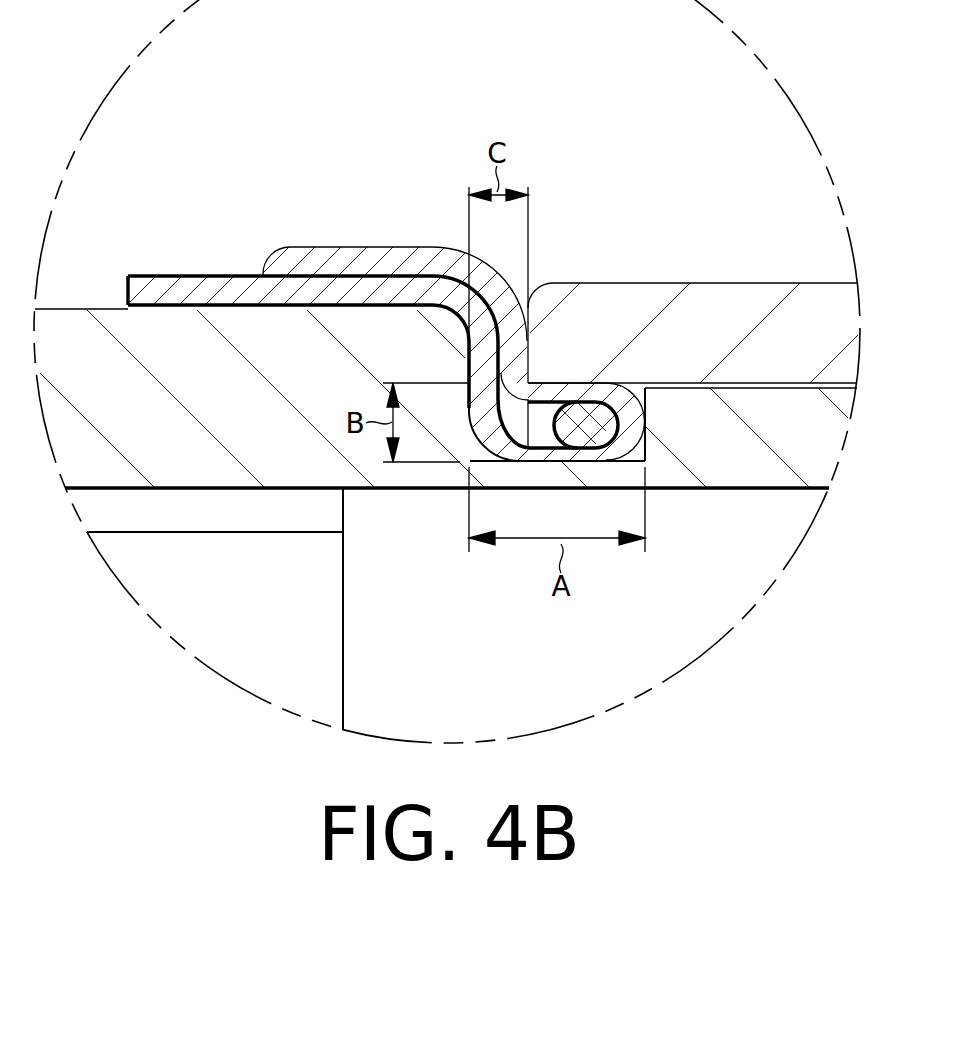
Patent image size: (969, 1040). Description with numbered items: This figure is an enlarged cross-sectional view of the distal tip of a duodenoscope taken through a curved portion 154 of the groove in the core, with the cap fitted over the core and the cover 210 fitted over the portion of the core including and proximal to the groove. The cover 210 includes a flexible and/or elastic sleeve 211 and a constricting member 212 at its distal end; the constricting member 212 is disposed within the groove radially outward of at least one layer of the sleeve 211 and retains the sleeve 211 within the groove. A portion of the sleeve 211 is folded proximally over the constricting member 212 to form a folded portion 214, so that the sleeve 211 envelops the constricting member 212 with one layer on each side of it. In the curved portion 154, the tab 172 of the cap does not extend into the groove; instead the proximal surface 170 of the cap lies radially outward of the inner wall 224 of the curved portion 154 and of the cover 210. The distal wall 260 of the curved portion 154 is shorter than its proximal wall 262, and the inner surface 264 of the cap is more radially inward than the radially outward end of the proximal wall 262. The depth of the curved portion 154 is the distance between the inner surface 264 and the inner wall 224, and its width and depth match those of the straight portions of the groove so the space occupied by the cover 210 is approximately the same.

The curved portion 154 is at (645, 452).
The proximal surface 170 is at (530, 318).
The tab 172 is at (727, 302).
The cover 210 is at (352, 224).
The sleeve 211 is at (187, 297).
The constricting member 212 is at (602, 425).
The folded portion 214 is at (543, 264).
The inner wall 224 is at (493, 463).
The distal wall 260 is at (645, 403).
The proximal wall 262 is at (468, 345).
The inner surface 264 is at (578, 382).